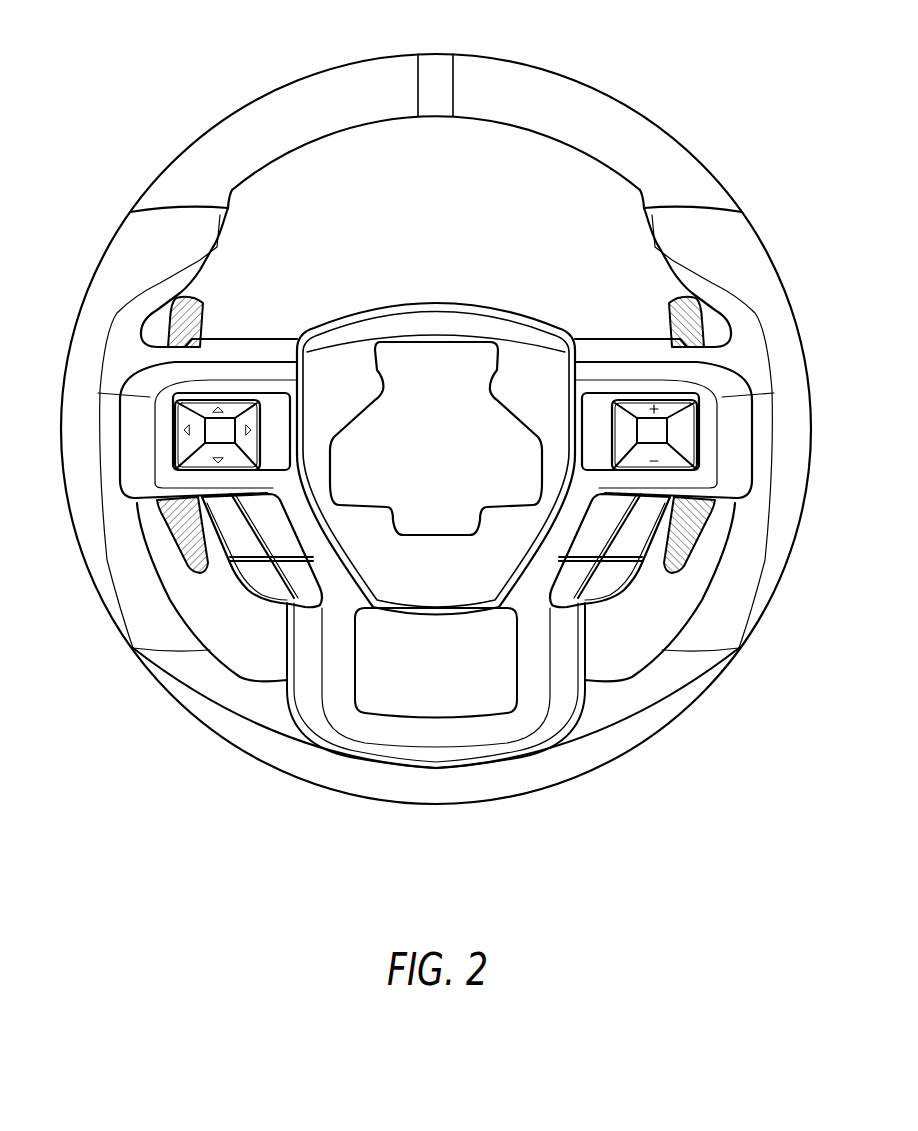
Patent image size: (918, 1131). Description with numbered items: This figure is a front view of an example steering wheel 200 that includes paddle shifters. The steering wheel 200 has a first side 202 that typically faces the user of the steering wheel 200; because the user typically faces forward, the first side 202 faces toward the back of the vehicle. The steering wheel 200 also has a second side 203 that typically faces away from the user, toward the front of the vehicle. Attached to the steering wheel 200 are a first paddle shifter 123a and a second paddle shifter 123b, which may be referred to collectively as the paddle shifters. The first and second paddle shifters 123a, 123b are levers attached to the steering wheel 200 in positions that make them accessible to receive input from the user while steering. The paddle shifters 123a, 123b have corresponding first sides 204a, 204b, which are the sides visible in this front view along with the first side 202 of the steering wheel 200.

The steering wheel 200 is at (612, 93).
The first side 202 is at (270, 118).
The second side 203 is at (242, 717).
The first paddle shifter 123a is at (147, 307).
The second paddle shifter 123b is at (703, 317).
The first side of first paddle shifter 204a is at (207, 313).
The first side of second paddle shifter 204b is at (665, 313).